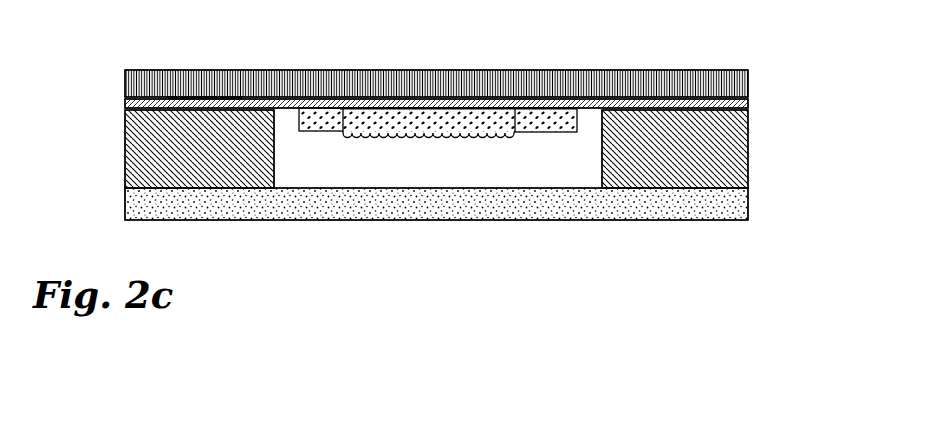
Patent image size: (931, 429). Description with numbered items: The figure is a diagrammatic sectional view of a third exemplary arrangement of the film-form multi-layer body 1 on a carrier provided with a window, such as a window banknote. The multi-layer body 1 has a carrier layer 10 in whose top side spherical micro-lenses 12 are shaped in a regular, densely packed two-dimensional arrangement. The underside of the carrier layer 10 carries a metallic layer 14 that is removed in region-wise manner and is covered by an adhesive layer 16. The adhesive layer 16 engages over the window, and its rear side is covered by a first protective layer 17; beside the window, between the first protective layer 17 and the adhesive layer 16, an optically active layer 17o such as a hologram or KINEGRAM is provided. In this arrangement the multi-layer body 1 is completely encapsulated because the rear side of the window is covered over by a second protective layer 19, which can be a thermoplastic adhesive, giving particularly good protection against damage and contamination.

The multi-layer body 1 is at (453, 142).
The carrier layer 10 is at (562, 125).
The micro-lenses 12 is at (390, 137).
The metallic layer 14 is at (343, 130).
The adhesive layer 16 is at (737, 108).
The first protective layer 17 is at (737, 80).
The optically active layer 17o is at (238, 53).
The second protective layer 19 is at (737, 210).